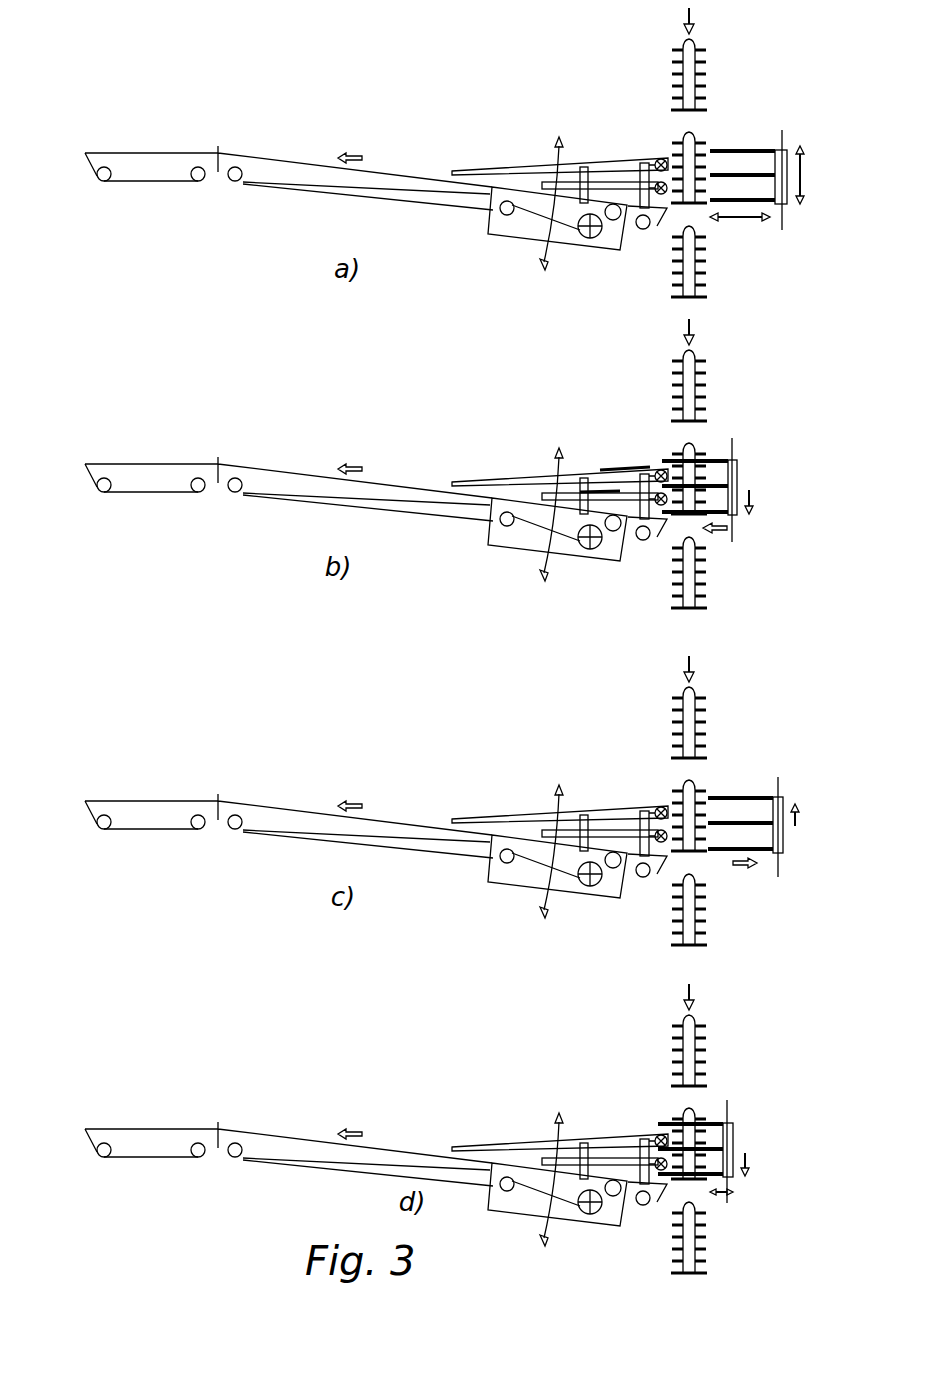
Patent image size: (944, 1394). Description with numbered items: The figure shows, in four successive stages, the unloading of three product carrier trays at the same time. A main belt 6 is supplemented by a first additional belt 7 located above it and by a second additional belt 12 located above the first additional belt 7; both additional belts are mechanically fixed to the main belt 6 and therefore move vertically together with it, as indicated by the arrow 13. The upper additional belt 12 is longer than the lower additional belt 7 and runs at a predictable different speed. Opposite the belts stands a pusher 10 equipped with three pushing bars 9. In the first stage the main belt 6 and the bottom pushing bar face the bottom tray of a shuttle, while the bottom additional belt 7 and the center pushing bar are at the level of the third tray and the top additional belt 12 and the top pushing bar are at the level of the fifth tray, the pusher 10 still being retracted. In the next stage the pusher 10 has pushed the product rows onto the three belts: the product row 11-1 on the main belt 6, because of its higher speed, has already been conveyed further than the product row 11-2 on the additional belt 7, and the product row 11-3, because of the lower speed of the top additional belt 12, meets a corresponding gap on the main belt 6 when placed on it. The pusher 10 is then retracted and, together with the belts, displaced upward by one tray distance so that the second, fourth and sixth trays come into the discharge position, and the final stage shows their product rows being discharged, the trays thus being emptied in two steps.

The main belt 6 is at (293, 170).
The first additional belt 7 is at (612, 188).
The pushing bars 9 is at (747, 198).
The pusher 10 is at (773, 228).
The product row 11-1 is at (553, 492).
The product row 11-2 is at (607, 490).
The product row 11-3 is at (640, 467).
The second additional belt 12 is at (637, 172).
The arrow 13 is at (552, 264).